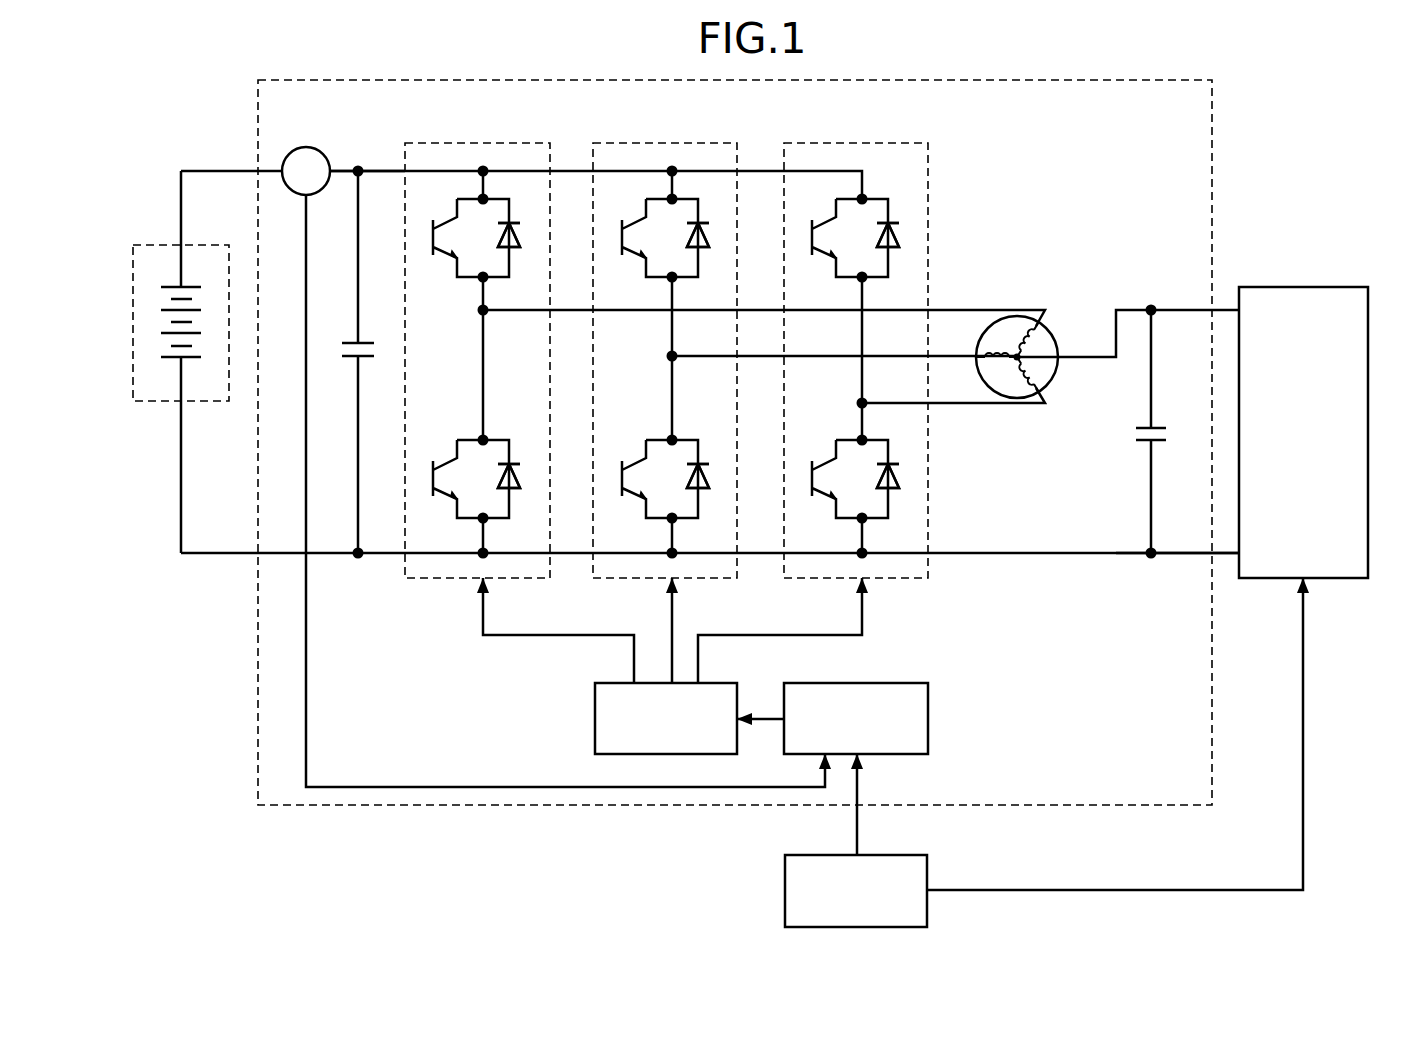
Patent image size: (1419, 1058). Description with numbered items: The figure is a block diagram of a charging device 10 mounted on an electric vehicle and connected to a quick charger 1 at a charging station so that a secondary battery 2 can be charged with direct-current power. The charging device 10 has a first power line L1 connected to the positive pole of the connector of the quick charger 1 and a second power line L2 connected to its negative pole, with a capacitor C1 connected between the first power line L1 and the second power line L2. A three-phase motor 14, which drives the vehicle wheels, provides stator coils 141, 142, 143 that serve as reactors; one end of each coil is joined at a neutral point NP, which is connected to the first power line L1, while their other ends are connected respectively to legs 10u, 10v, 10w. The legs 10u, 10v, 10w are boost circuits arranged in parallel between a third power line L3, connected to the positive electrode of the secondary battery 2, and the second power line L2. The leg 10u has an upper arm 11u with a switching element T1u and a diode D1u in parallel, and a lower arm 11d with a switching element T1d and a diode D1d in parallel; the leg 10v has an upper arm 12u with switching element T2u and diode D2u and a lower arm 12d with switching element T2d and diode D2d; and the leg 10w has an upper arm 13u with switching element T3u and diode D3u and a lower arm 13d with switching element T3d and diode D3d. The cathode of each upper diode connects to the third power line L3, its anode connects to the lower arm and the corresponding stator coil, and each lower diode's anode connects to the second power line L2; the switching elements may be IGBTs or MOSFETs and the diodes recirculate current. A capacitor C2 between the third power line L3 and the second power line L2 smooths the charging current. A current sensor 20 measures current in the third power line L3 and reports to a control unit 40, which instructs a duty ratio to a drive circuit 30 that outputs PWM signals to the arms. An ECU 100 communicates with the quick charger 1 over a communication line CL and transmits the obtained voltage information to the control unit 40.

The quick charger 1 is at (1318, 287).
The secondary battery 2 is at (156, 245).
The charging device 10 is at (1212, 125).
The leg 10u is at (862, 145).
The leg 10v is at (673, 145).
The leg 10w is at (483, 145).
The upper arm 11u is at (865, 220).
The lower arm 11d is at (895, 444).
The upper arm 12u is at (676, 220).
The lower arm 12d is at (677, 444).
The upper arm 13u is at (489, 220).
The lower arm 13d is at (488, 444).
The switching element T1u is at (828, 218).
The switching element T1d is at (826, 462).
The switching element T2u is at (640, 218).
The switching element T2d is at (636, 462).
The switching element T3u is at (456, 218).
The switching element T3d is at (447, 462).
The diode D1u is at (890, 220).
The diode D1d is at (903, 462).
The diode D2u is at (701, 220).
The diode D2d is at (699, 462).
The diode D3u is at (510, 220).
The diode D3d is at (510, 462).
The motor 14 is at (1040, 338).
The stator coil 141 is at (1045, 378).
The stator coil 142 is at (996, 352).
The stator coil 143 is at (1039, 333).
The neutral point NP is at (1017, 357).
The current sensor 20 is at (306, 155).
The drive circuit 30 is at (713, 684).
The control unit 40 is at (878, 684).
The ECU 100 is at (881, 855).
The first power line L1 is at (1178, 306).
The second power line L2 is at (1178, 558).
The third power line L3 is at (383, 173).
The capacitor C1 is at (1156, 426).
The capacitor C2 is at (365, 338).
The communication line CL is at (1118, 889).